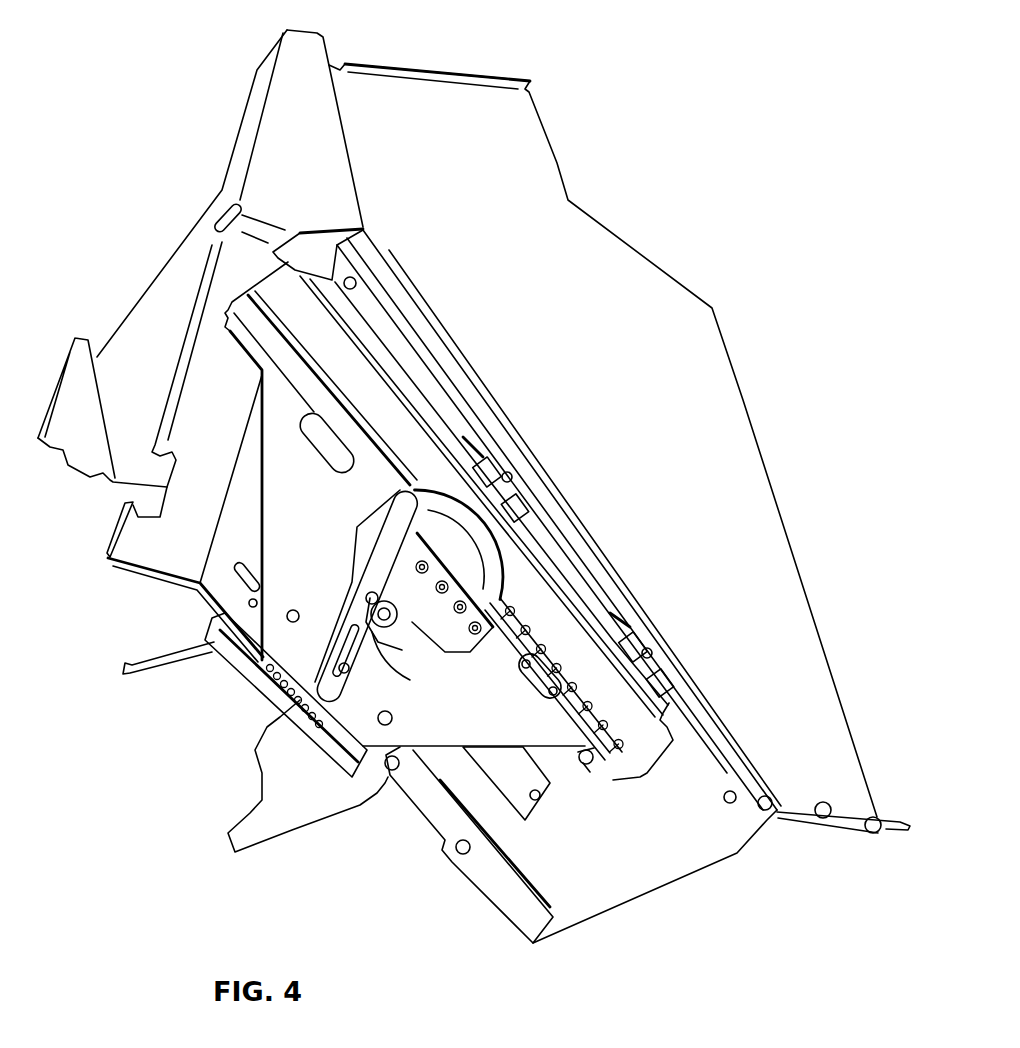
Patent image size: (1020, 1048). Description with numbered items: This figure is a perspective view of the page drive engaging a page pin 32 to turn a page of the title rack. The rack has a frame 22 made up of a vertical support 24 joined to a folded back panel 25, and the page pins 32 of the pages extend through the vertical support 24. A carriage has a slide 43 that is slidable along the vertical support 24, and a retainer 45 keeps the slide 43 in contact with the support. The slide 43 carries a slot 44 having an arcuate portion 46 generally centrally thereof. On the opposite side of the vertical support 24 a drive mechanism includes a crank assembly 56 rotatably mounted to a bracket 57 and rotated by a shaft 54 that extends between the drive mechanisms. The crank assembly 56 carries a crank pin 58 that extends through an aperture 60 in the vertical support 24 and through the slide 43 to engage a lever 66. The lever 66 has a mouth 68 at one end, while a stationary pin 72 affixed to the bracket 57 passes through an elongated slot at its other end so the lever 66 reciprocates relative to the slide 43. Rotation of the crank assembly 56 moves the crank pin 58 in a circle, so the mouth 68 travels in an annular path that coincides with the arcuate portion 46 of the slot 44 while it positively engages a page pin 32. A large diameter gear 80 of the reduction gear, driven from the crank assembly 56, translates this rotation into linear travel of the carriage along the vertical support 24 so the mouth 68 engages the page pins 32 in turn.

The frame 22 is at (558, 163).
The vertical support 24 is at (657, 890).
The folded back panel 25 is at (121, 325).
The page pin 32 is at (417, 488).
The slide 43 is at (667, 700).
The slot 44 is at (323, 373).
The retainer 45 is at (510, 463).
The arcuate portion 46 is at (497, 553).
The shaft 54 is at (178, 665).
The crank assembly 56 is at (398, 628).
The bracket 57 is at (257, 692).
The crank pin 58 is at (367, 598).
The aperture 60 is at (537, 800).
The lever 66 is at (377, 567).
The mouth 68 is at (377, 520).
The stationary pin 72 is at (347, 670).
The large diameter gear 80 is at (313, 710).